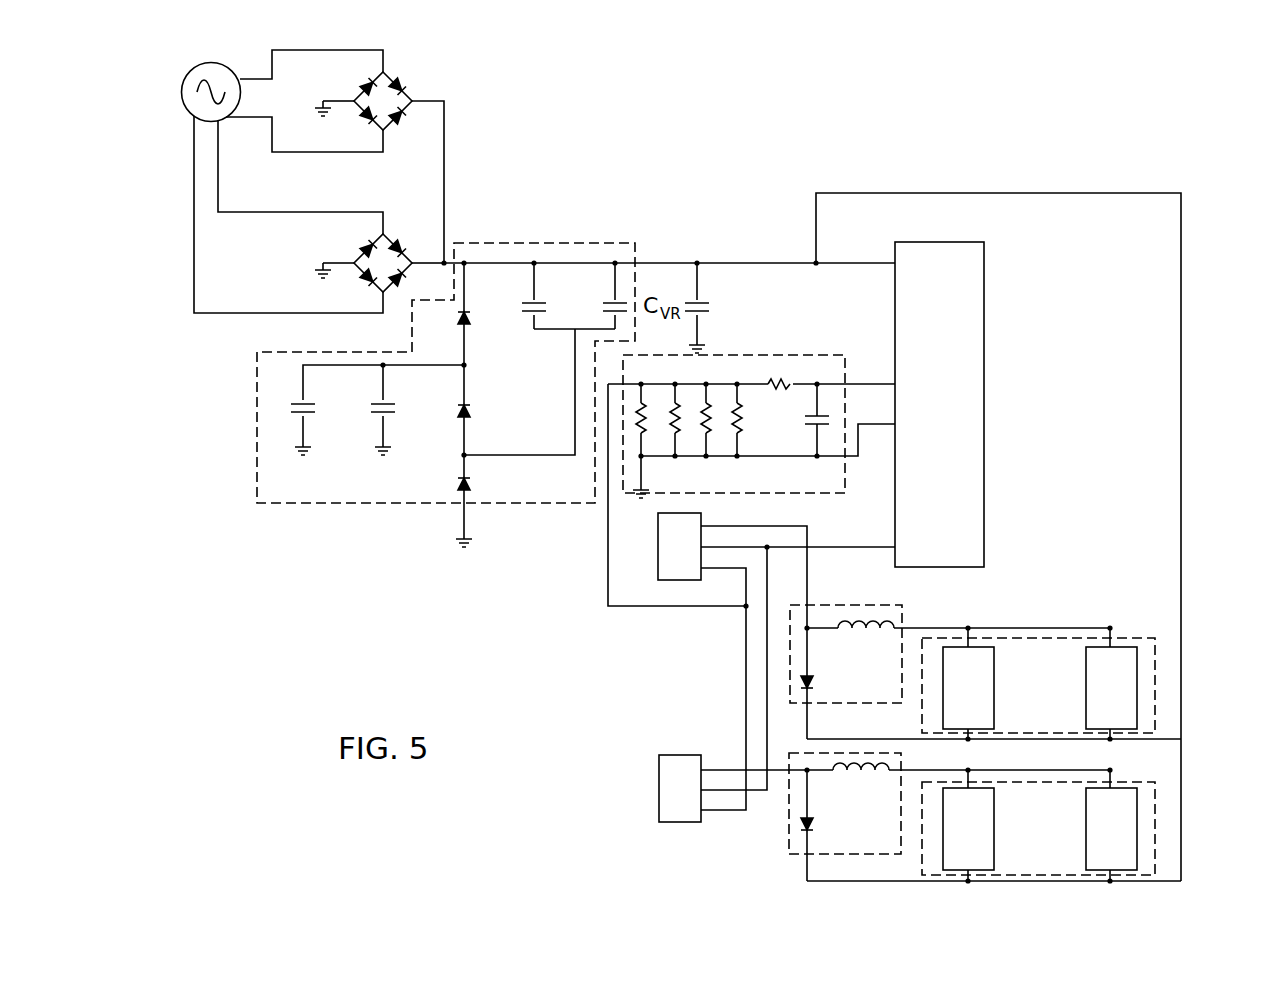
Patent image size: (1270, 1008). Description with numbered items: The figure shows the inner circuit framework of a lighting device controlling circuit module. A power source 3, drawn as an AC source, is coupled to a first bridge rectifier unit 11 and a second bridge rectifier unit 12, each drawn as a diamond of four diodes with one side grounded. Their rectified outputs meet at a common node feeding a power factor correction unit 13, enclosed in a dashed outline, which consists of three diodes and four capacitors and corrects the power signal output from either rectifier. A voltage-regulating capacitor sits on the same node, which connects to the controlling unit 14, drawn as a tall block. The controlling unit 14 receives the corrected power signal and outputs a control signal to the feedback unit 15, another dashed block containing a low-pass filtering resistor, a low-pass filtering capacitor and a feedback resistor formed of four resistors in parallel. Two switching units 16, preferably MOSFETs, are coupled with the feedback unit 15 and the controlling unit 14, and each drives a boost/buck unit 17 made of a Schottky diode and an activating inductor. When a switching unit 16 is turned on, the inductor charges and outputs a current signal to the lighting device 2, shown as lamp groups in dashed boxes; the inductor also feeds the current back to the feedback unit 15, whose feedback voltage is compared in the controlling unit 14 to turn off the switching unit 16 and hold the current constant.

The lighting device 2 is at (1138, 637).
The power source 3 is at (186, 117).
The first bridge rectifier unit 11 is at (421, 84).
The second bridge rectifier unit 12 is at (398, 230).
The power factor correction unit 13 is at (482, 238).
The controlling unit 14 is at (939, 404).
The feedback unit 15 is at (738, 353).
The switching unit 16 is at (776, 667).
The boost/buck unit 17 is at (788, 676).